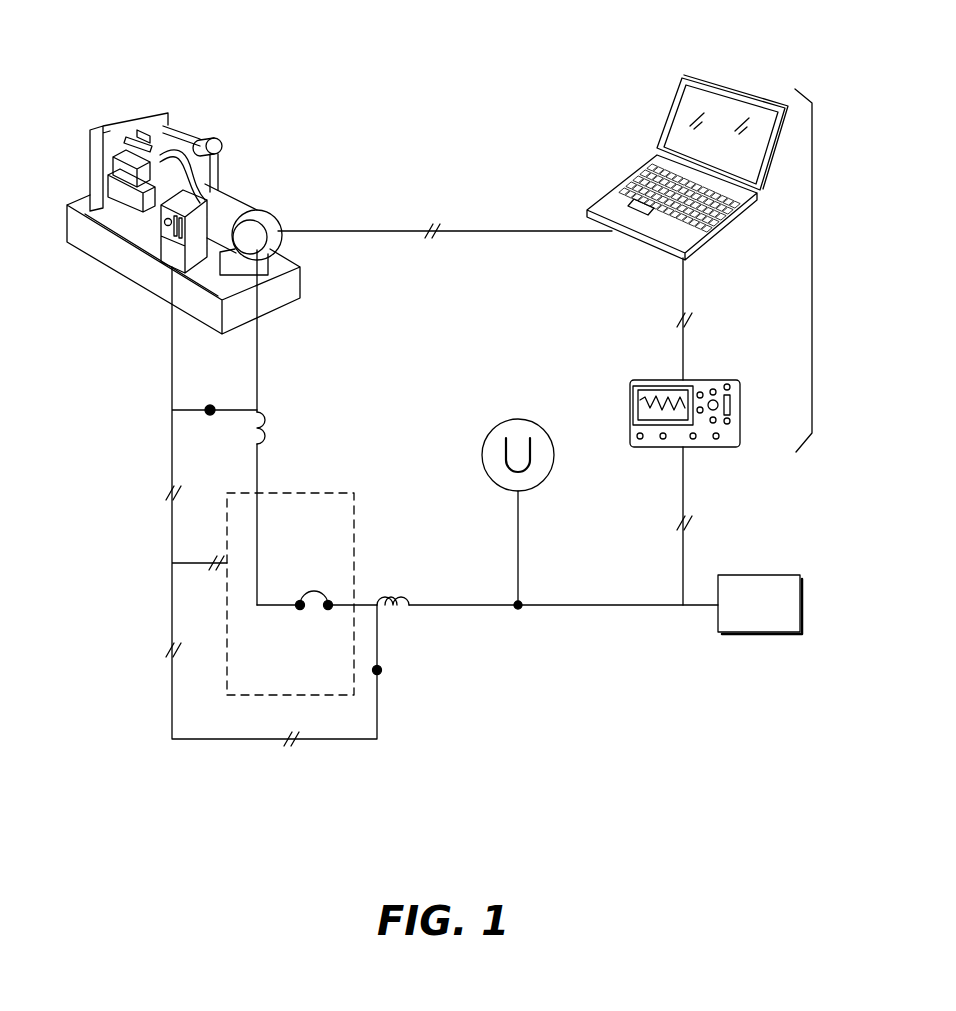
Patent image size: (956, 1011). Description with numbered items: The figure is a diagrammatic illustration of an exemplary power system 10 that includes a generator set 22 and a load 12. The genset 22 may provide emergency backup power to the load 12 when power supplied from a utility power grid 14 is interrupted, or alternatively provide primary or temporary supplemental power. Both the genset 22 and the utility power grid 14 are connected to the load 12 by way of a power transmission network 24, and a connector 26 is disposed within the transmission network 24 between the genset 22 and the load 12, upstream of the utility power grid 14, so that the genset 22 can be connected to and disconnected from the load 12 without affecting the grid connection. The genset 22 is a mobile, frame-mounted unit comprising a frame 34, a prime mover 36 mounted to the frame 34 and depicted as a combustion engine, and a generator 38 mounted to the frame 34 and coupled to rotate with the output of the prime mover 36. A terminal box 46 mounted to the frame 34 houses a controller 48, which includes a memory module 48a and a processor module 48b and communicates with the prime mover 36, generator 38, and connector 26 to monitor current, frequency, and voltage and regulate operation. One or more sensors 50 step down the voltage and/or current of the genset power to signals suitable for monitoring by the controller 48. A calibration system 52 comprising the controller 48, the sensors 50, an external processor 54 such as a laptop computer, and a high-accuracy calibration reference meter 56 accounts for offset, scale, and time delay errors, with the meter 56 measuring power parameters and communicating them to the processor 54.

The power system 10 is at (282, 788).
The load 12 is at (742, 633).
The utility power grid 14 is at (545, 482).
The generator set 22 is at (349, 162).
The power transmission network 24 is at (146, 573).
The connector 26 is at (325, 493).
The frame 34 is at (303, 266).
The prime mover 36 is at (102, 258).
The generator 38 is at (243, 198).
The terminal box 46 is at (151, 273).
The controller 48 is at (210, 210).
The memory module 48a is at (197, 253).
The processor module 48b is at (152, 222).
The sensors 50 is at (212, 414).
The calibration system 52 is at (812, 258).
The external processor 54 is at (684, 77).
The calibration reference meter 56 is at (630, 402).